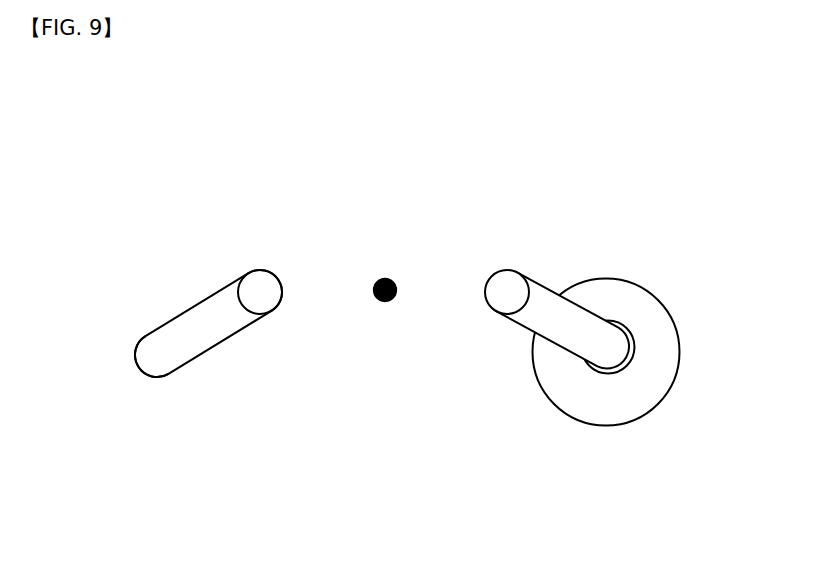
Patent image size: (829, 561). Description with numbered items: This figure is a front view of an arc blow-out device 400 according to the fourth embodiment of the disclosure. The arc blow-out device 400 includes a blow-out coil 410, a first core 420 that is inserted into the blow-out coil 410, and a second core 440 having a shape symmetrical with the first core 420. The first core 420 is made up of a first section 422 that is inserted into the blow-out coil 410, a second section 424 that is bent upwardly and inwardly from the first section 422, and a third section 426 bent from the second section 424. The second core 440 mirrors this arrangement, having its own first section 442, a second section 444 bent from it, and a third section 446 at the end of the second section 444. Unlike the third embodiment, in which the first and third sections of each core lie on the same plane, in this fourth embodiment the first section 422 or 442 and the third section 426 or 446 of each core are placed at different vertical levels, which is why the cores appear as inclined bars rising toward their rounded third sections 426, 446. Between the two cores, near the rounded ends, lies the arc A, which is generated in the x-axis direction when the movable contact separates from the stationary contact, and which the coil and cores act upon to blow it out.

The arc blow-out device 400 is at (554, 184).
The blow-out coil 410 is at (670, 350).
The first core 420 is at (657, 493).
The first section 422 is at (632, 365).
The second section 424 is at (572, 338).
The third section 426 is at (505, 295).
The second core 440 is at (267, 493).
The first section 442 is at (142, 363).
The second section 444 is at (188, 338).
The third section 446 is at (262, 295).
The arc A is at (388, 278).